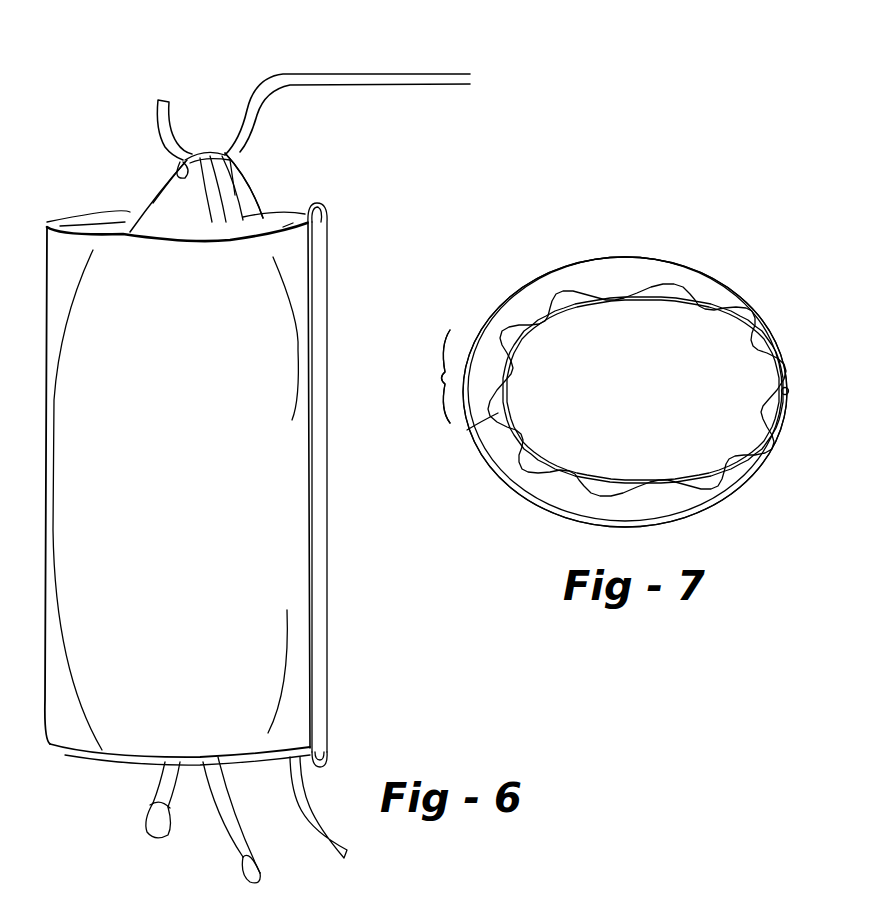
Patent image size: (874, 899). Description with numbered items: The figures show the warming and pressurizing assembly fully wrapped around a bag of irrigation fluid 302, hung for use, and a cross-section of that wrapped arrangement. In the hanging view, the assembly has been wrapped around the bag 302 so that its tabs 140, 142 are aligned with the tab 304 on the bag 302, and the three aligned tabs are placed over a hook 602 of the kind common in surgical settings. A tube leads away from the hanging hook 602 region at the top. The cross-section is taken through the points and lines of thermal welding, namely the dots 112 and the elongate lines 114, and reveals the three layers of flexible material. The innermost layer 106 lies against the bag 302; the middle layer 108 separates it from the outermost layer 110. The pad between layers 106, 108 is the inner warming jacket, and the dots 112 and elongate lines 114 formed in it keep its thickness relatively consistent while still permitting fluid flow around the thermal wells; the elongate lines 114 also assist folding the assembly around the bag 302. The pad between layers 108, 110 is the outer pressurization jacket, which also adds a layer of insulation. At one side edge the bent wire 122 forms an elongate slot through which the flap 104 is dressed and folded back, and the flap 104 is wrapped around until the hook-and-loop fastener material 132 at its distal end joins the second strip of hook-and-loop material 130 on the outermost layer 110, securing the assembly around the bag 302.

In FIG. 6, the hook 602 is at (323, 76).
In FIG. 6, the tab 142 is at (143, 207).
In FIG. 6, the tab 140 is at (240, 167).
In FIG. 6, the tab 304 is at (247, 193).
In FIG. 7, the flap 104 is at (752, 503).
In FIG. 7, the outermost layer 110 is at (720, 270).
In FIG. 7, the innermost layer 106 is at (743, 320).
In FIG. 7, the middle layer 108 is at (737, 303).
In FIG. 7, the dots 112 is at (620, 263).
In FIG. 7, the bent wire 122 is at (792, 392).
In FIG. 7, the elongate lines 114 is at (467, 430).
In FIG. 7, the second strip of hook-and-loop material 130 is at (417, 376).
In FIG. 7, the hook-and-loop fastener material 132 is at (417, 376).
In FIG. 7, the bag of irrigation fluid 302 is at (637, 393).